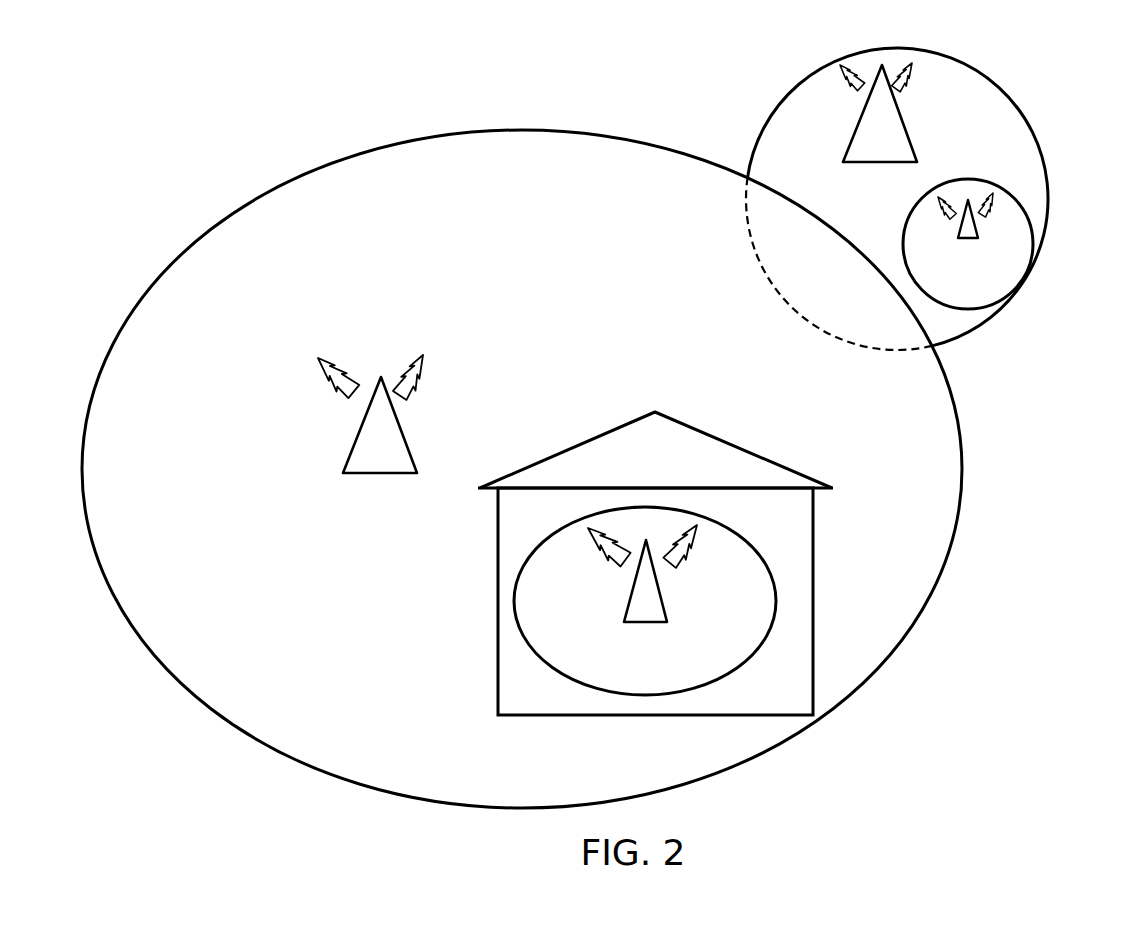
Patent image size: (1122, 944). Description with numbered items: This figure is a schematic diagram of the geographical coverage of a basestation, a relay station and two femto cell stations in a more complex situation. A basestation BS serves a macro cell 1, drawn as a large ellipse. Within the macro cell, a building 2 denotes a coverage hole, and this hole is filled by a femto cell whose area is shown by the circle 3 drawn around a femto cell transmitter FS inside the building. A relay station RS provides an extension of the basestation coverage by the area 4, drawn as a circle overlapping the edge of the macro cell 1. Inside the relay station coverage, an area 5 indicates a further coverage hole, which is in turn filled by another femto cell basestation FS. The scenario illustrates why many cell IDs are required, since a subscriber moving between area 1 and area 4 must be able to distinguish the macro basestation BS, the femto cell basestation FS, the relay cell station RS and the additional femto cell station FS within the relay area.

The macro cell 1 is at (948, 553).
The building 2 is at (813, 587).
The femto cell area 3 is at (608, 660).
The relay station coverage area 4 is at (1024, 115).
The coverage hole within relay station coverage 5 is at (1018, 234).